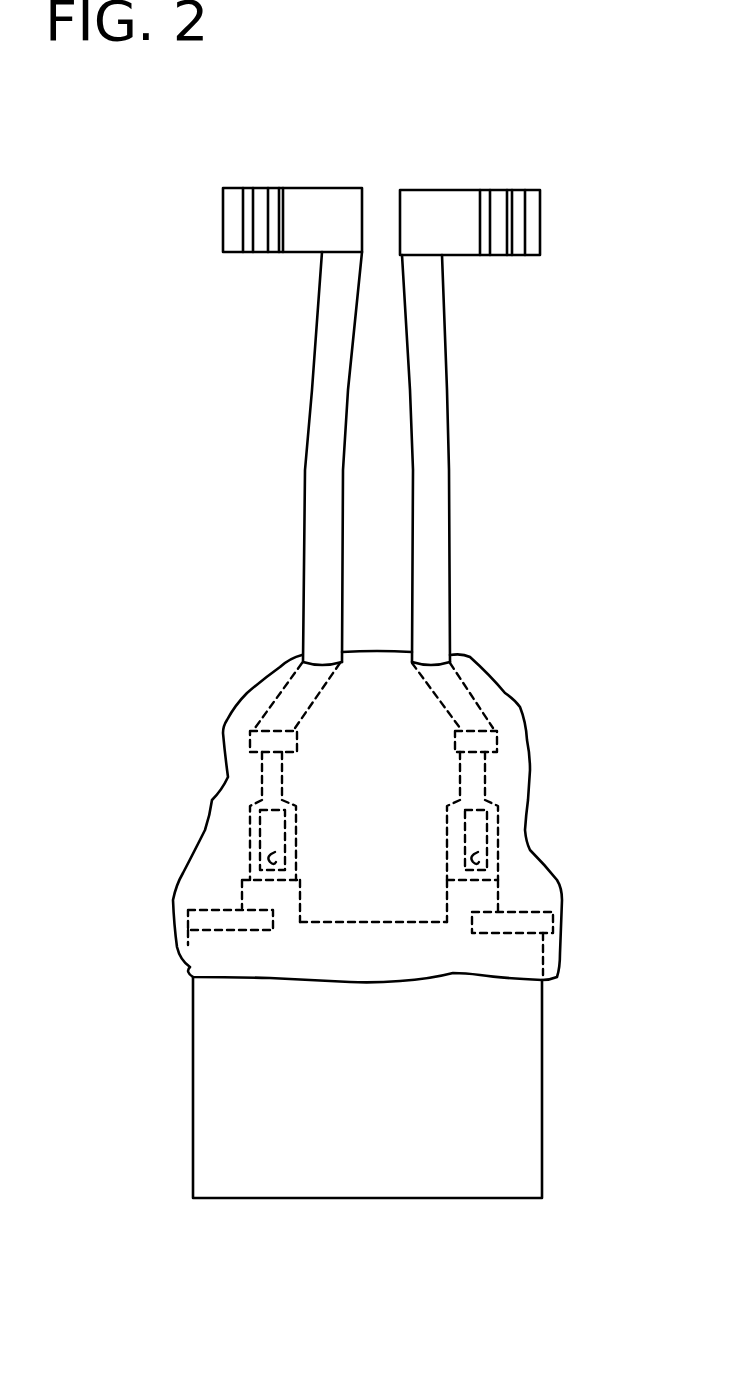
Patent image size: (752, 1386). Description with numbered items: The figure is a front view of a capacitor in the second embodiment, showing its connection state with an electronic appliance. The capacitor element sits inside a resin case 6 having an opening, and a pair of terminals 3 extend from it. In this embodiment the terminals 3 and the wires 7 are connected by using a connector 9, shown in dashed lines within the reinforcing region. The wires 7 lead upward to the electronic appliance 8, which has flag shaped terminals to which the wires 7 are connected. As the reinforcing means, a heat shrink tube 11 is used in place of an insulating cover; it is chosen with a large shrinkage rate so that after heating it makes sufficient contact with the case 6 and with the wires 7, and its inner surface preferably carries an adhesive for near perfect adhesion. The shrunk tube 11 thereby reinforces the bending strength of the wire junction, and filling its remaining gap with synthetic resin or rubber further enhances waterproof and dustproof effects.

The electronic appliance 8 is at (432, 217).
The wires 7 is at (438, 459).
The heat shrink tube 11 is at (517, 775).
The terminals 3 is at (258, 895).
The connector 9 is at (457, 845).
The case 6 is at (502, 1115).